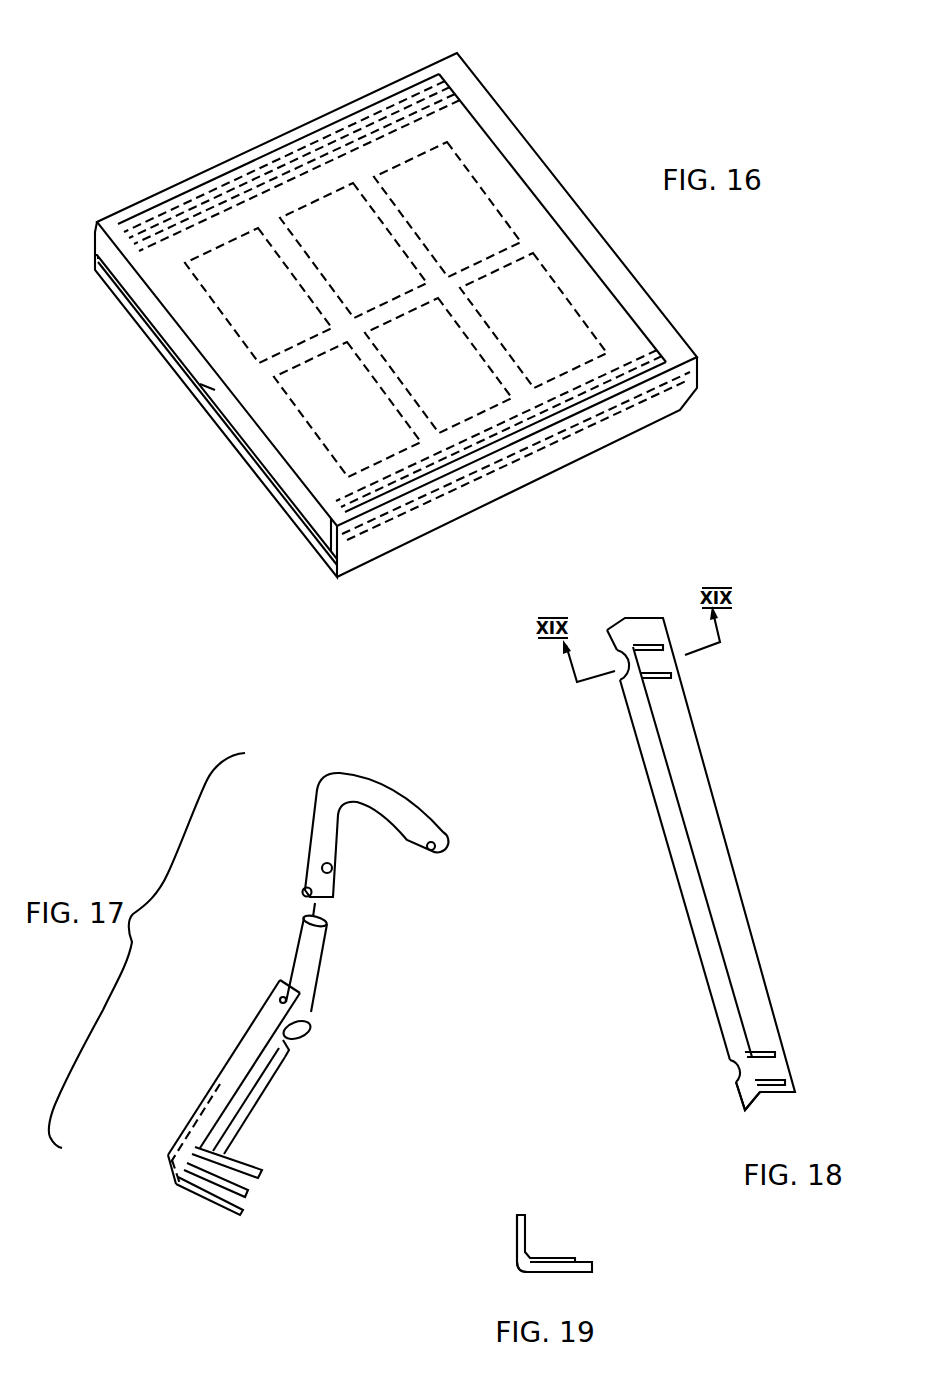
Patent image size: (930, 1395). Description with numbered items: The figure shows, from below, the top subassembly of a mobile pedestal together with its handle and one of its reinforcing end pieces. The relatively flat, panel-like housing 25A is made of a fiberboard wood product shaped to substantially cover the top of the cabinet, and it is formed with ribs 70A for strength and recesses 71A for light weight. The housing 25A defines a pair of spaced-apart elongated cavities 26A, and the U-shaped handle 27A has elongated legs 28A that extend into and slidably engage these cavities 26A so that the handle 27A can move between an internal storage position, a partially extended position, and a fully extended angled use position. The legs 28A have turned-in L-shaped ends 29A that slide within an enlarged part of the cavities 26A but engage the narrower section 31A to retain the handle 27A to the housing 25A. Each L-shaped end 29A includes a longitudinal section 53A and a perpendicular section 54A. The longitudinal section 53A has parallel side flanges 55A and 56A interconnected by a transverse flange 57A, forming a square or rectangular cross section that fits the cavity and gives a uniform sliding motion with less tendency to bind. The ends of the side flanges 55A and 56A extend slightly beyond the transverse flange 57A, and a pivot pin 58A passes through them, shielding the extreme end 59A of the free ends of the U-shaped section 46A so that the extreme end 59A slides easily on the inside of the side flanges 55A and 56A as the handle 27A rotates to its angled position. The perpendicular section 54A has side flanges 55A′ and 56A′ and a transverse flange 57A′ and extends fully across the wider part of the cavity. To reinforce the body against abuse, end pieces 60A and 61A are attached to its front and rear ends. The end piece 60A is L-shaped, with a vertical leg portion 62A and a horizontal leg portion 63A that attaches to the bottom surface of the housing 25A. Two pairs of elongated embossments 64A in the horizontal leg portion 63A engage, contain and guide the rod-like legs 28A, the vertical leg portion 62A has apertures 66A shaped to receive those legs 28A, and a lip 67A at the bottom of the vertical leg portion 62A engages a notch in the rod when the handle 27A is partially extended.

In FIG. 16, the housing 25A is at (433, 75).
In FIG. 16, the elongated cavities 26A is at (268, 158).
In FIG. 16, the U-shaped handle 27A is at (204, 388).
In FIG. 17, the U-shaped handle 27A is at (402, 1005).
In FIG. 16, the elongated legs 28A is at (318, 125).
In FIG. 17, the elongated legs 28A is at (300, 940).
In FIG. 16, the L-shaped ends 29A is at (393, 88).
In FIG. 17, the L-shaped ends 29A is at (190, 1035).
In FIG. 16, the narrower section 31A is at (146, 210).
In FIG. 17, the U-shaped section 46A is at (428, 850).
In FIG. 17, the longitudinal section 53A is at (212, 1073).
In FIG. 17, the perpendicular section 54A is at (200, 1212).
In FIG. 17, the side flange 55A is at (283, 1085).
In FIG. 17, the side flange 55A′ is at (260, 1162).
In FIG. 17, the side flange 56A is at (293, 1048).
In FIG. 17, the side flange 56A′ is at (236, 1218).
In FIG. 17, the transverse flange 57A is at (243, 1098).
In FIG. 17, the transverse flange 57A′ is at (245, 1188).
In FIG. 16, the pivot pin 58A is at (598, 418).
In FIG. 17, the pivot pin 58A is at (278, 992).
In FIG. 17, the extreme end 59A is at (310, 1032).
In FIG. 16, the end piece 60A is at (150, 302).
In FIG. 18, the end piece 60A is at (772, 718).
In FIG. 19, the end piece 60A is at (478, 1215).
In FIG. 16, the end piece 61A is at (548, 178).
In FIG. 18, the vertical leg portion 62A is at (686, 893).
In FIG. 19, the vertical leg portion 62A is at (515, 1232).
In FIG. 16, the horizontal leg portion 63A is at (192, 342).
In FIG. 18, the horizontal leg portion 63A is at (735, 888).
In FIG. 19, the horizontal leg portion 63A is at (580, 1272).
In FIG. 16, the elongated embossments 64A is at (262, 433).
In FIG. 18, the elongated embossments 64A is at (637, 632).
In FIG. 19, the elongated embossments 64A is at (557, 1257).
In FIG. 18, the apertures 66A is at (625, 672).
In FIG. 18, the lip 67A is at (760, 1070).
In FIG. 19, the lip 67A is at (515, 1262).
In FIG. 16, the ribs 70A is at (196, 292).
In FIG. 16, the recesses 71A is at (245, 324).